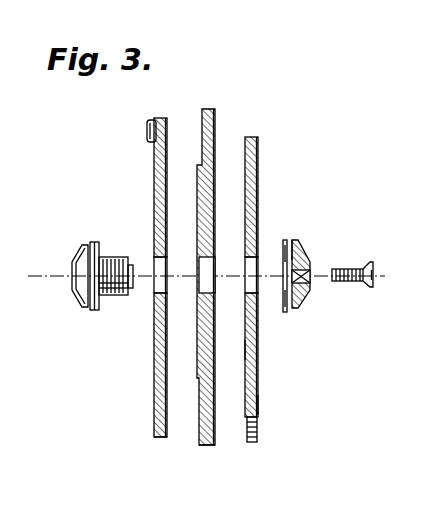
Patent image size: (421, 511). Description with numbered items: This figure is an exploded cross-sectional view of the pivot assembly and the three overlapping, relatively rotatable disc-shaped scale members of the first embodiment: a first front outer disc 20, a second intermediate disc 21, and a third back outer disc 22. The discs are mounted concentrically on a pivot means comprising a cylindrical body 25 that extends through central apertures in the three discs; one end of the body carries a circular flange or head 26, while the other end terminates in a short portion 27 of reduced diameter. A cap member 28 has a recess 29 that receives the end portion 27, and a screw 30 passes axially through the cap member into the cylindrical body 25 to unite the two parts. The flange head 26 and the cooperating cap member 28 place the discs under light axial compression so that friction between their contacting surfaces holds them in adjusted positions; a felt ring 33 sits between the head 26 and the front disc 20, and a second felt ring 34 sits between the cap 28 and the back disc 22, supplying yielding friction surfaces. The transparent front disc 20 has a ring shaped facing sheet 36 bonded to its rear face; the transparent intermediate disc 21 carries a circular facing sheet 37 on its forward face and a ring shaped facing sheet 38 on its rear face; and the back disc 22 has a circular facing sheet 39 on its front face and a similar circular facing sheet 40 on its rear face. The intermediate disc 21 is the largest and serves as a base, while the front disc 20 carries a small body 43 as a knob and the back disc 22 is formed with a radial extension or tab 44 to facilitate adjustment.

The first front outer disc 20 is at (163, 117).
The second intermediate disc 21 is at (208, 108).
The third back outer disc 22 is at (257, 136).
The cylindrical body 25 is at (108, 257).
The circular flange or head 26 is at (76, 298).
The short portion of reduced diameter 27 is at (131, 289).
The cap member 28 is at (303, 252).
The recess 29 is at (291, 242).
The screw 30 is at (348, 283).
The felt ring 33 is at (95, 241).
The second felt ring 34 is at (285, 313).
The ring shaped facing sheet 36 is at (167, 438).
The circular facing sheet 37 is at (198, 378).
The ring shaped facing sheet 38 is at (214, 444).
The circular facing sheet 39 is at (245, 352).
The circular facing sheet 40 is at (259, 404).
The small body 43 is at (148, 137).
The radial extension or tab 44 is at (254, 442).